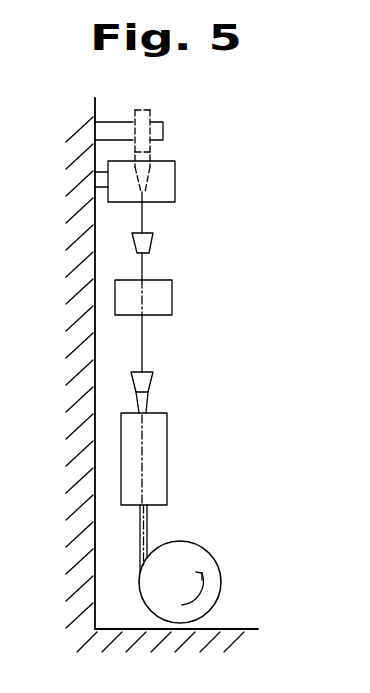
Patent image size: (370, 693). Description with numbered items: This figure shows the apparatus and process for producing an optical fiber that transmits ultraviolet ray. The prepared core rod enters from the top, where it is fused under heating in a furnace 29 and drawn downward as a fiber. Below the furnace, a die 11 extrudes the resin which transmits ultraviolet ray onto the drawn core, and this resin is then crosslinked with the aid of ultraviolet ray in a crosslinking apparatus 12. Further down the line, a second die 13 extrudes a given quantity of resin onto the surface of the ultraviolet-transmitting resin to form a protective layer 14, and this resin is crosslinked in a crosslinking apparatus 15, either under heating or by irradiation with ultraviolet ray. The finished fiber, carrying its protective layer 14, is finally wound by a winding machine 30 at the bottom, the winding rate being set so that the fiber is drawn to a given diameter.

The furnace 29 is at (177, 170).
The die 11 is at (153, 242).
The crosslinking apparatus 12 is at (165, 296).
The die 13 is at (155, 382).
The crosslinking apparatus 15 is at (168, 425).
The protective layer 14 is at (150, 522).
The winding machine 30 is at (218, 572).